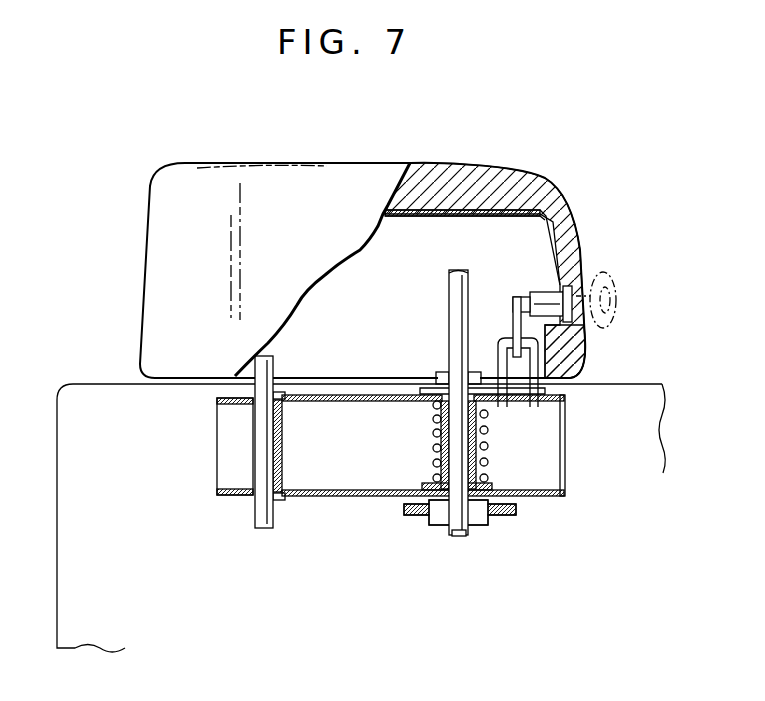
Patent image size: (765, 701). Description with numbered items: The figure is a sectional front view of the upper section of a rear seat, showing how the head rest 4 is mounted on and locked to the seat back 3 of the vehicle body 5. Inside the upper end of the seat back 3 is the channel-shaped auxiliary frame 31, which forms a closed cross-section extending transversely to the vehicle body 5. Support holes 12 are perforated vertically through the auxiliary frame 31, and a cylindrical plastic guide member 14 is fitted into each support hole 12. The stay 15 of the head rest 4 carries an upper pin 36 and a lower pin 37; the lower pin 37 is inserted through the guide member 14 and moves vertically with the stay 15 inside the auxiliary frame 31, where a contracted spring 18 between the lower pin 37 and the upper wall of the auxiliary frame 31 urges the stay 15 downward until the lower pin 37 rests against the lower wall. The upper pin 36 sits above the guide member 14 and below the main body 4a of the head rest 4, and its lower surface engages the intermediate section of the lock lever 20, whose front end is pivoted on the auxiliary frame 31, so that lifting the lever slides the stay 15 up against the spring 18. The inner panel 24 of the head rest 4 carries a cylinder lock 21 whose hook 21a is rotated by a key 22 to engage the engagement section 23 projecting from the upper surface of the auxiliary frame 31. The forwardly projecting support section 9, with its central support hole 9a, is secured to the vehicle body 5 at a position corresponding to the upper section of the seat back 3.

The seat back 3 is at (112, 383).
The head rest 4 is at (287, 153).
The main body 4a is at (505, 178).
The vehicle body 5 is at (420, 532).
The support section 9 is at (510, 514).
The support hole 9a is at (480, 520).
The support hole 12 is at (275, 418).
The guide member 14 is at (476, 440).
The stay 15 is at (250, 421).
The spring 18 is at (489, 461).
The lock lever 20 is at (425, 386).
The cylinder lock 21 is at (536, 293).
The hook 21a is at (512, 318).
The key 22 is at (617, 300).
The engagement section 23 is at (566, 340).
The inner panel 24 is at (430, 218).
The auxiliary frame 31 is at (336, 396).
The upper pin 36 is at (440, 375).
The lower pin 37 is at (430, 486).